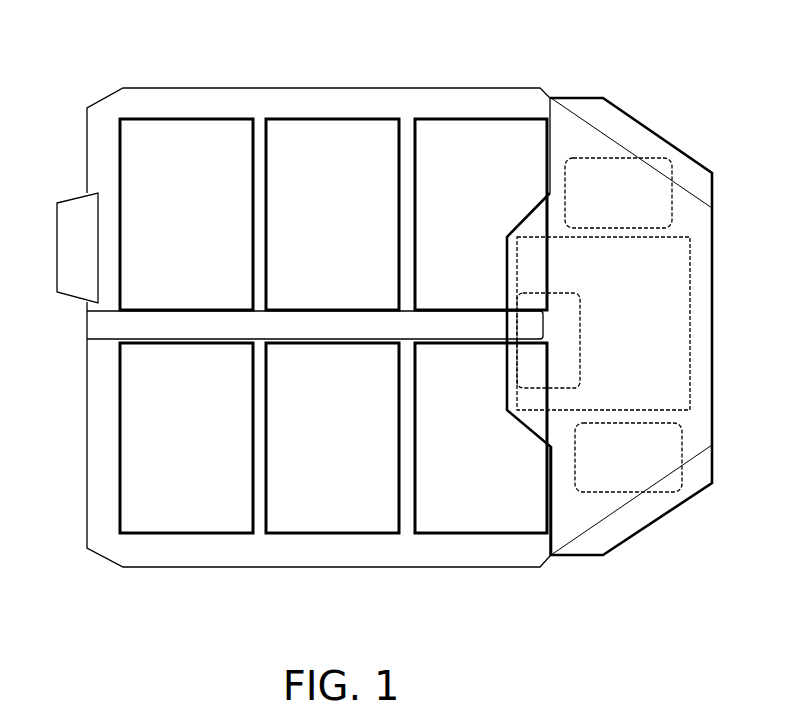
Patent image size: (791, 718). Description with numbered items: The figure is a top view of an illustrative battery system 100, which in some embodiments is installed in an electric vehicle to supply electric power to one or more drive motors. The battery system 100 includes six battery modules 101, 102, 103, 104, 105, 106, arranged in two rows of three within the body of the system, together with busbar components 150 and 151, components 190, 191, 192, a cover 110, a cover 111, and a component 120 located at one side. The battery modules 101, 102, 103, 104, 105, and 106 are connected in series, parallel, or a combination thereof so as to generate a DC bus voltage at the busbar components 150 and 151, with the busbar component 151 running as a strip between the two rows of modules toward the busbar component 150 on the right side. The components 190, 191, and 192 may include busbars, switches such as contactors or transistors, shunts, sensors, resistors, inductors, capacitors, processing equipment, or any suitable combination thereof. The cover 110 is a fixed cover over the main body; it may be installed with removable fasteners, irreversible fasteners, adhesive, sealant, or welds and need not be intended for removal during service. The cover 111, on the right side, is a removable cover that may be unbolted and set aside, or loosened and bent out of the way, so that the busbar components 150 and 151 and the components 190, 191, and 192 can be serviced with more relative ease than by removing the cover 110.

The battery system 100 is at (342, 48).
The battery module 101 is at (168, 187).
The battery module 102 is at (313, 187).
The battery module 103 is at (456, 186).
The battery module 104 is at (168, 409).
The battery module 105 is at (313, 409).
The battery module 106 is at (449, 409).
The cover 110 is at (322, 553).
The cover 111 is at (587, 546).
The component 120 is at (57, 292).
The busbar component 150 is at (588, 336).
The busbar component 151 is at (103, 322).
The component 190 is at (599, 206).
The component 191 is at (609, 471).
The component 192 is at (529, 377).